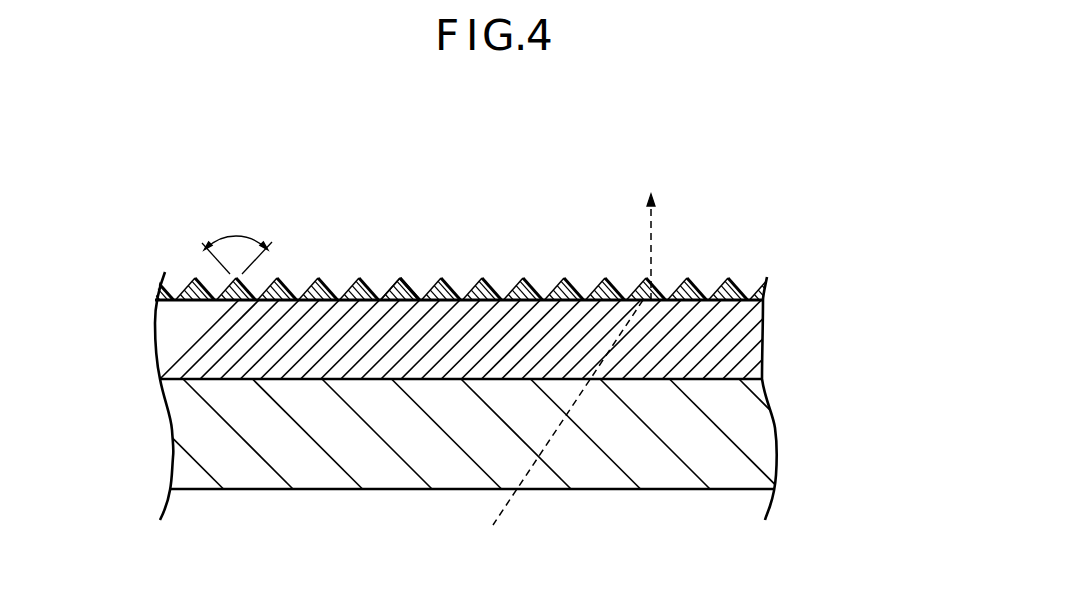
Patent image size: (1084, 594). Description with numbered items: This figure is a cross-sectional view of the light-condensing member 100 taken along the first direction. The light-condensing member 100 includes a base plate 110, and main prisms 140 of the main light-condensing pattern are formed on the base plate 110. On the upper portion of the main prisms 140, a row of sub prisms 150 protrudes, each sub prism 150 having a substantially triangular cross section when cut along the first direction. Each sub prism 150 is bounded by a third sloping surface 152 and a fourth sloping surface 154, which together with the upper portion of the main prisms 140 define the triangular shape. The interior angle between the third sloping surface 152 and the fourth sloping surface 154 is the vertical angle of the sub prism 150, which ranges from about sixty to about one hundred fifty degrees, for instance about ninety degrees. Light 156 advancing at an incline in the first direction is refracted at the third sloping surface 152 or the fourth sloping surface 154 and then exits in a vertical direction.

The light-condensing member 100 is at (508, 164).
The base plate 110 is at (752, 433).
The main prisms 140 is at (760, 343).
The sub prism 150 is at (482, 287).
The third sloping surface 152 is at (390, 287).
The fourth sloping surface 154 is at (412, 288).
The light 156 is at (653, 218).